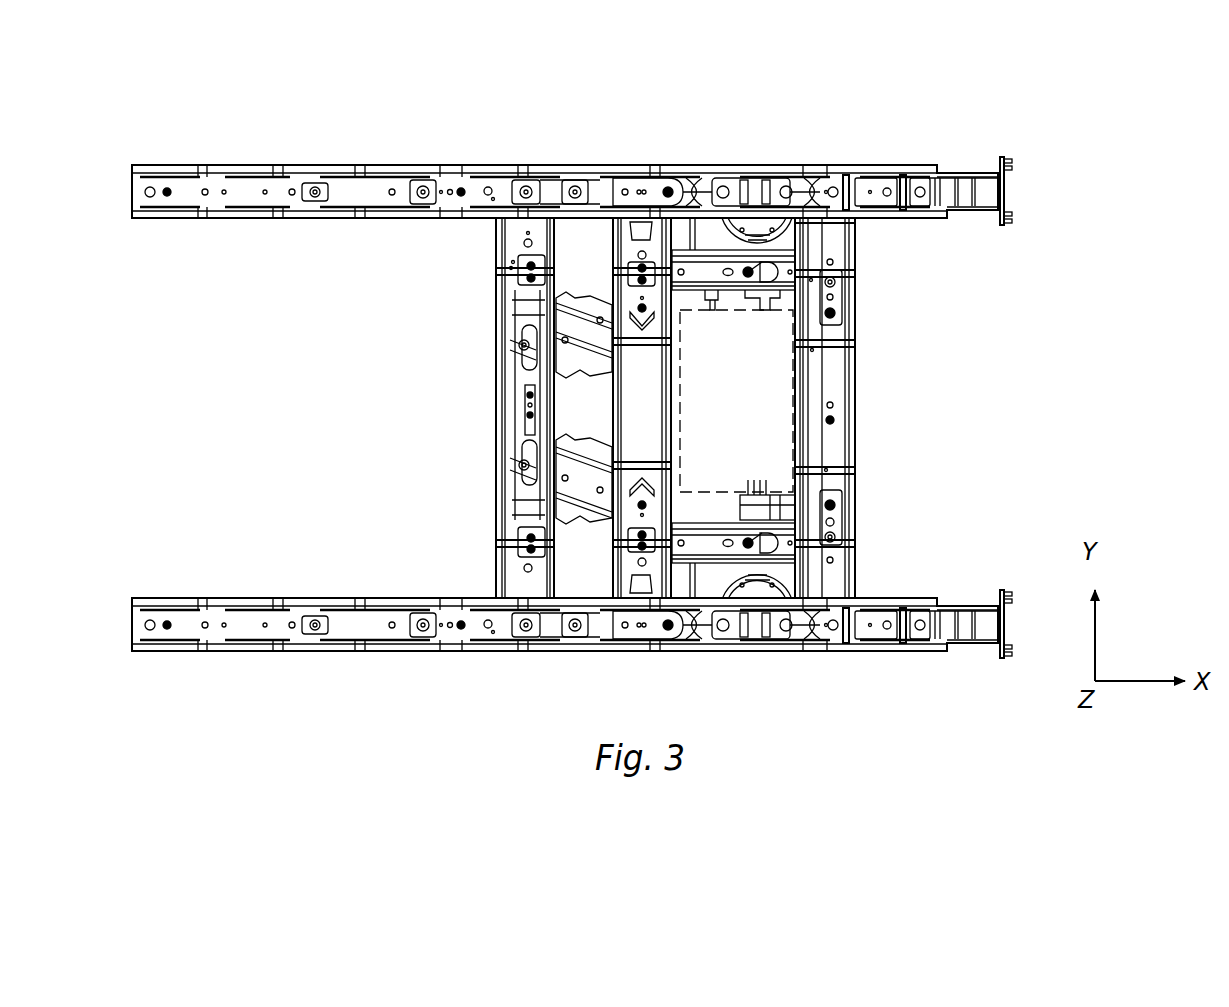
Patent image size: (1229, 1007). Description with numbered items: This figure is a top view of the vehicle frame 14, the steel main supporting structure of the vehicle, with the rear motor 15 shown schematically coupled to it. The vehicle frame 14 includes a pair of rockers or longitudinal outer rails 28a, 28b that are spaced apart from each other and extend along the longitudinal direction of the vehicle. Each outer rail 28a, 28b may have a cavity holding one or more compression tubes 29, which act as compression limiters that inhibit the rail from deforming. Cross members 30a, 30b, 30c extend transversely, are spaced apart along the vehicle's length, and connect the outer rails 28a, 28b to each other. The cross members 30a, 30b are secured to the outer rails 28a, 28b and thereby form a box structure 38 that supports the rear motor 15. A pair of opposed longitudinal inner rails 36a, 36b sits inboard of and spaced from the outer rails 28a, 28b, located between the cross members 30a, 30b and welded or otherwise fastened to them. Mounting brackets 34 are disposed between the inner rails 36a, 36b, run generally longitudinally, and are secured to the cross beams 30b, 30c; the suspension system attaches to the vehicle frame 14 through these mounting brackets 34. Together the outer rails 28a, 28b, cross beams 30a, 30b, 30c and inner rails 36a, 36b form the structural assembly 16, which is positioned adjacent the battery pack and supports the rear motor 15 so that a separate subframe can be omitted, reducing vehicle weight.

The vehicle frame 14 is at (572, 399).
The rear motor 15 is at (800, 375).
The structural assembly 16 is at (648, 397).
The longitudinal outer rail 28a is at (383, 652).
The longitudinal outer rail 28b is at (449, 160).
The compression tube 29 is at (902, 178).
The cross member 30a is at (860, 267).
The cross member 30b is at (597, 429).
The cross member 30c is at (487, 241).
The mounting bracket 34 is at (583, 364).
The longitudinal inner rail 36a is at (798, 570).
The longitudinal inner rail 36b is at (765, 247).
The box structure 38 is at (738, 245).